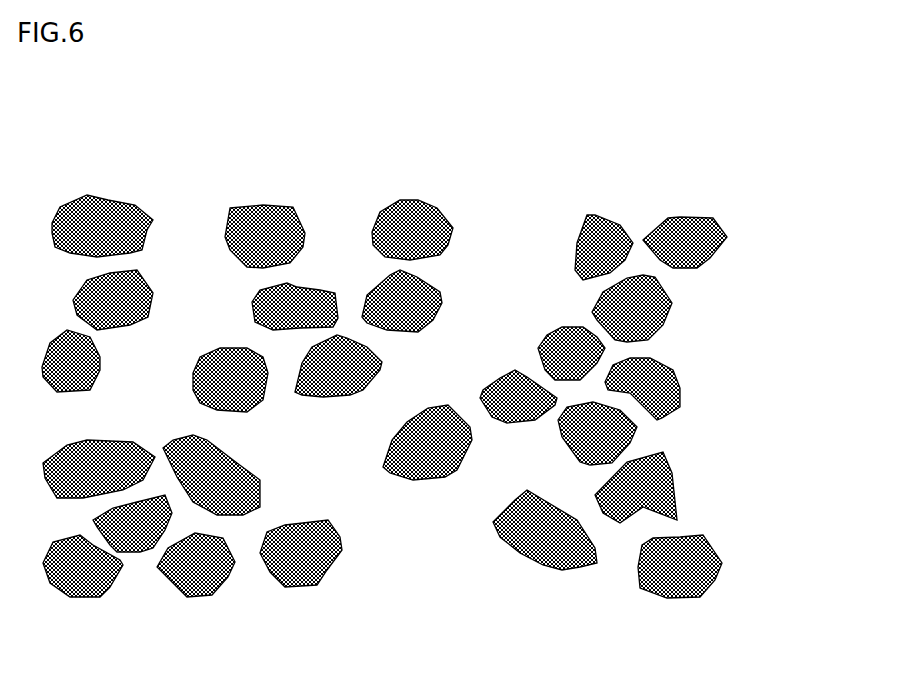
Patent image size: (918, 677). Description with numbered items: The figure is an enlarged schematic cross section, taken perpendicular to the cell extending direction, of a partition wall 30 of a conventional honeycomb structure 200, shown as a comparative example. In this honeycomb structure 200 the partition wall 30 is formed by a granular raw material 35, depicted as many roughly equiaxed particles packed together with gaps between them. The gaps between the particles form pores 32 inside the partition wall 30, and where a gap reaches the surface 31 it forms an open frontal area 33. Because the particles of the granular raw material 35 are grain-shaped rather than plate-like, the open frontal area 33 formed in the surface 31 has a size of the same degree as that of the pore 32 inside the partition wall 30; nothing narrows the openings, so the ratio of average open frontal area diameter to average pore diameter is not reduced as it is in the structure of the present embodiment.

The partition wall 30 is at (400, 192).
The surface 31 is at (250, 205).
The pore 32 is at (505, 310).
The open frontal area 33 is at (514, 223).
The granular raw material 35 is at (137, 203).
The honeycomb structure 200 is at (715, 124).